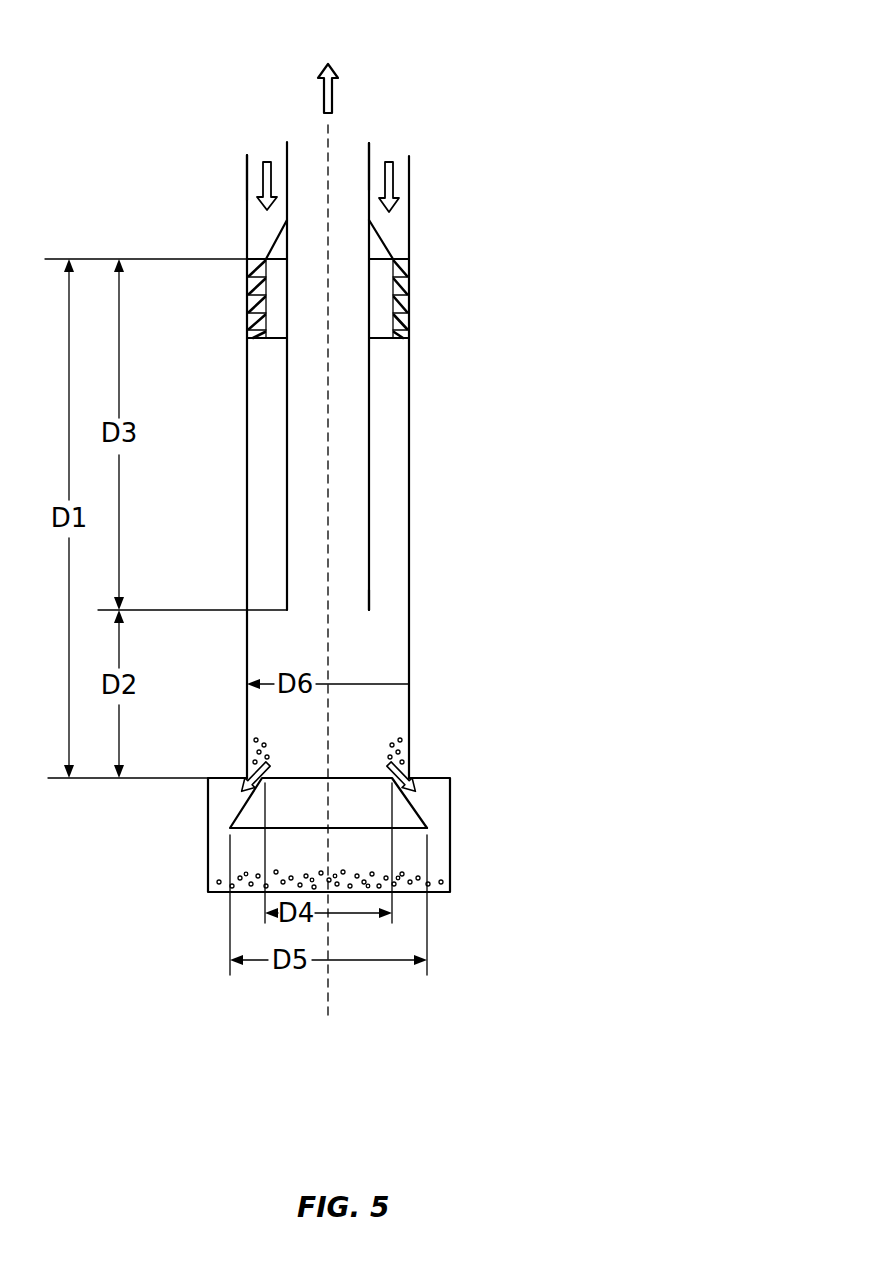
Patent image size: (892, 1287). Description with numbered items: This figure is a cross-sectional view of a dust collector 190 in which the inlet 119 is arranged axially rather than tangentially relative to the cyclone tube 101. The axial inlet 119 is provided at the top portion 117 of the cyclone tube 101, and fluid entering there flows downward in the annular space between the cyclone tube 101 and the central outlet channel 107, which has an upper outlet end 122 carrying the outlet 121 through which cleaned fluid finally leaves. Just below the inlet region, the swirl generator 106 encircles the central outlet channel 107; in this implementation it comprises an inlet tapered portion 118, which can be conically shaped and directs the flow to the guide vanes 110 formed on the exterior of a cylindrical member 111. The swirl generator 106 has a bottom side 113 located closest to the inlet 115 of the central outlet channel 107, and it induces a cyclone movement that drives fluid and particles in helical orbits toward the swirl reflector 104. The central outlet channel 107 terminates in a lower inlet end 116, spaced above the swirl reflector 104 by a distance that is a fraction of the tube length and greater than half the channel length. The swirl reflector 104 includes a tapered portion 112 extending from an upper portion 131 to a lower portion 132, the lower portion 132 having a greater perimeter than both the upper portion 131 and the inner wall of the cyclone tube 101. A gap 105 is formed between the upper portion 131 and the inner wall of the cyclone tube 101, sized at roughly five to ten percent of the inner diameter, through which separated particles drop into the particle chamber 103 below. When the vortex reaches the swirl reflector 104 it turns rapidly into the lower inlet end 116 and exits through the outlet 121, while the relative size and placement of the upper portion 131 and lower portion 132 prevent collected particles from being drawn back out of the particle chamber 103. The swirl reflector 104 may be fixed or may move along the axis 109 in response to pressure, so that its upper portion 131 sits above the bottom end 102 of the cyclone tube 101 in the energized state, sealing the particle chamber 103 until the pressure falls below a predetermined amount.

The dust collector 190 is at (464, 50).
The cyclone tube 101 is at (409, 473).
The central outlet channel 107 is at (370, 450).
The outlet 121 is at (308, 148).
The upper outlet end 122 is at (372, 143).
The axial inlet 119 is at (267, 160).
The top portion 117 is at (247, 155).
The cylindrical member 111 is at (267, 257).
The inlet tapered portion 118 is at (377, 247).
The swirl generator 106 is at (395, 267).
The guide vanes 110 is at (247, 308).
The bottom side 113 is at (277, 340).
The inlet 115 is at (345, 610).
The lower inlet end 116 is at (368, 610).
The gap 105 is at (247, 772).
The upper portion 131 is at (410, 762).
The tapered portion 112 is at (258, 803).
The bottom end 102 is at (412, 772).
The particle chamber 103 is at (450, 837).
The swirl reflector 104 is at (297, 780).
The lower portion 132 is at (407, 828).
The axis 109 is at (328, 993).